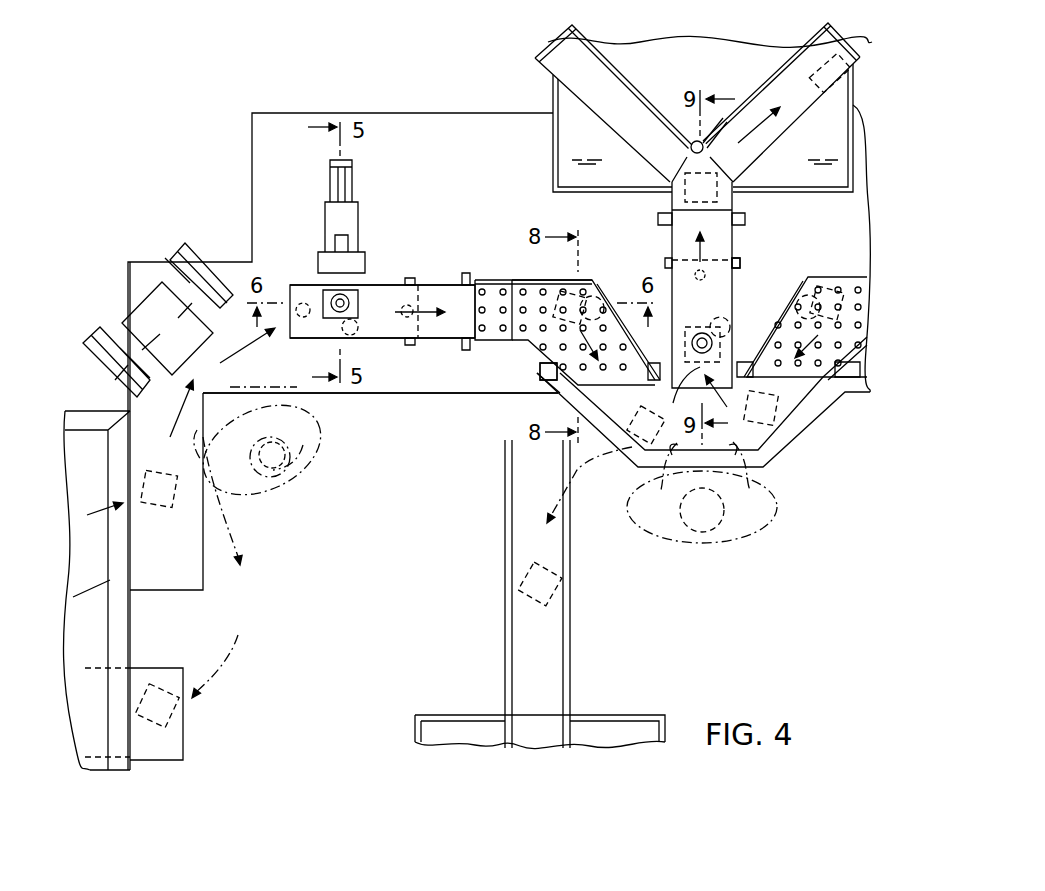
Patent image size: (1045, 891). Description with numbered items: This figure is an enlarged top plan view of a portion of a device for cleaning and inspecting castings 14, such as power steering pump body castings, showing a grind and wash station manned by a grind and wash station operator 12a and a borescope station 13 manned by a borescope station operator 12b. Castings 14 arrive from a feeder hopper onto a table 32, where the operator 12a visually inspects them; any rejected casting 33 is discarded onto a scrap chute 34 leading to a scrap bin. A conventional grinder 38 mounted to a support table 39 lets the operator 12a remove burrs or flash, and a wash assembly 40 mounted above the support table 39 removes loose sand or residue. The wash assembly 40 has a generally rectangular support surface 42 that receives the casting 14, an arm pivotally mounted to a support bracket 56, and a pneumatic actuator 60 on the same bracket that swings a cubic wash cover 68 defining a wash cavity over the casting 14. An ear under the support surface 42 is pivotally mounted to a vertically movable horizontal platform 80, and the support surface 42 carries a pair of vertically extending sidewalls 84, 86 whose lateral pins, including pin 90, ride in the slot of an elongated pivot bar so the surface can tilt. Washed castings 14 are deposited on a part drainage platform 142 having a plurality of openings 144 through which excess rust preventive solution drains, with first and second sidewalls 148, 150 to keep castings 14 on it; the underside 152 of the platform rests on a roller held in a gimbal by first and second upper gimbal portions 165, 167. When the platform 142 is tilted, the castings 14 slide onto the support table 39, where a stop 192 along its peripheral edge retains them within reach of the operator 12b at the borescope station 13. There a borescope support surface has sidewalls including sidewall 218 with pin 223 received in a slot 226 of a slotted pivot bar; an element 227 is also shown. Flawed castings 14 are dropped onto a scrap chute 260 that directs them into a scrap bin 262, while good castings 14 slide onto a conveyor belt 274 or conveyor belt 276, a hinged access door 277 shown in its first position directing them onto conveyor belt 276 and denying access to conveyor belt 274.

The grind and wash station operator 12a is at (300, 467).
The borescope station operator 12b is at (702, 535).
The borescope station 13 is at (782, 467).
The casting 14 is at (560, 300).
The table 32 is at (205, 583).
The rejected casting 33 is at (173, 712).
The scrap chute 34 is at (175, 743).
The grinder 38 is at (158, 317).
The support table 39 is at (238, 267).
The wash assembly 40 is at (338, 216).
The support surface 42 is at (376, 328).
The support bracket 56 is at (340, 216).
The pneumatic actuator 60 is at (340, 182).
The wash cover 68 is at (333, 261).
The horizontal platform 80 is at (466, 272).
The sidewall 84 is at (440, 283).
The sidewall 86 is at (452, 338).
The pin 90 is at (468, 350).
The part drainage platform 142 is at (600, 290).
The openings 144 is at (495, 322).
The first sidewall 148 is at (497, 280).
The second sidewall 150 is at (540, 382).
The underside 152 is at (548, 382).
The first upper gimbal portion 165 is at (660, 357).
The second upper gimbal portion 167 is at (560, 372).
The stop 192 is at (632, 448).
The sidewall 218 is at (683, 290).
The pin 223 is at (737, 266).
The slot 226 is at (733, 283).
The vertical channel 227 is at (670, 265).
The scrap chute 260 is at (530, 622).
The scrap bin 262 is at (455, 730).
The conveyor belt 274 is at (560, 48).
The conveyor belt 276 is at (790, 85).
The hinged access door 277 is at (690, 152).